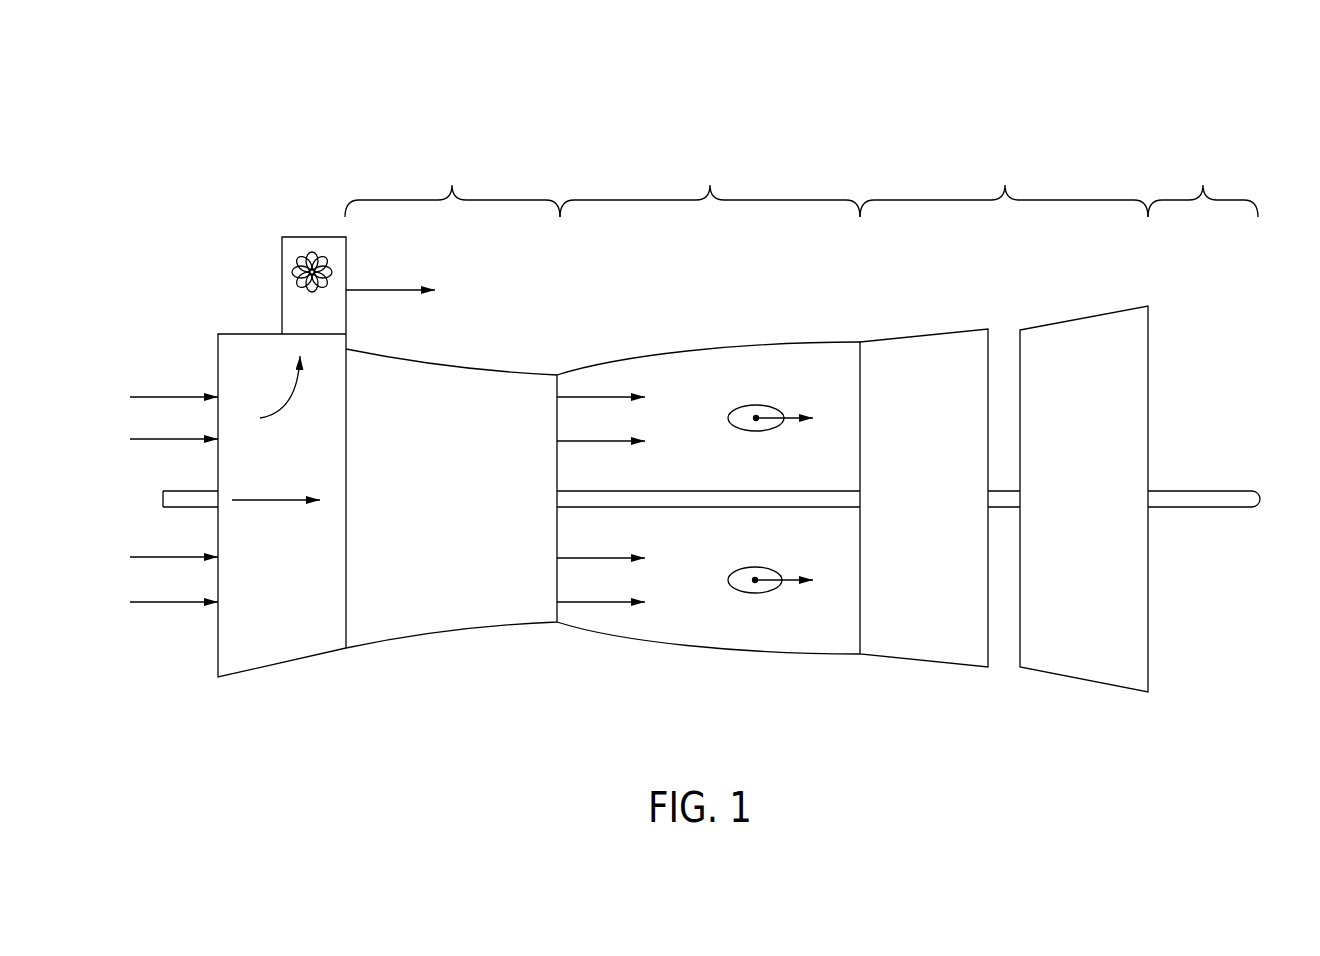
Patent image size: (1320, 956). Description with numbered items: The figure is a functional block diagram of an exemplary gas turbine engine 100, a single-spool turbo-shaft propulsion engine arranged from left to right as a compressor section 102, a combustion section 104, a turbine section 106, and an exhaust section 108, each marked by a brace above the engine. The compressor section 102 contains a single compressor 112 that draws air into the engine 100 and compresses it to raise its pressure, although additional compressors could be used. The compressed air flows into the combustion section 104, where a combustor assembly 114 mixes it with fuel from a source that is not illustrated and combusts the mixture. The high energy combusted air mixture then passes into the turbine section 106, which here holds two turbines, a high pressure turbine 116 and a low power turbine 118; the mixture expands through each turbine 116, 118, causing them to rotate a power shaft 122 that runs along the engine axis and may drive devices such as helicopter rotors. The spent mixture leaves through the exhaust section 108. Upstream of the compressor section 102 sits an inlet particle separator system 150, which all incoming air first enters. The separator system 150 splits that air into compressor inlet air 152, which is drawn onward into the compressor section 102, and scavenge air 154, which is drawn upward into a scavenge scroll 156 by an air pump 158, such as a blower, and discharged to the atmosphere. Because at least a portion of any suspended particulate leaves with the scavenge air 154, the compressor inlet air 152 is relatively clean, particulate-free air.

The gas turbine engine 100 is at (838, 138).
The compressor section 102 is at (452, 185).
The combustion section 104 is at (710, 185).
The turbine section 106 is at (1004, 185).
The exhaust section 108 is at (1203, 185).
The compressor 112 is at (440, 625).
The combustor assembly 114 is at (740, 408).
The high pressure turbine 116 is at (920, 652).
The low power turbine 118 is at (1083, 672).
The power shaft 122 is at (1205, 490).
The inlet particle separator system 150 is at (287, 660).
The compressor inlet air 152 is at (268, 500).
The scavenge air 154 is at (260, 418).
The scavenge scroll 156 is at (313, 237).
The air pump 158 is at (337, 272).